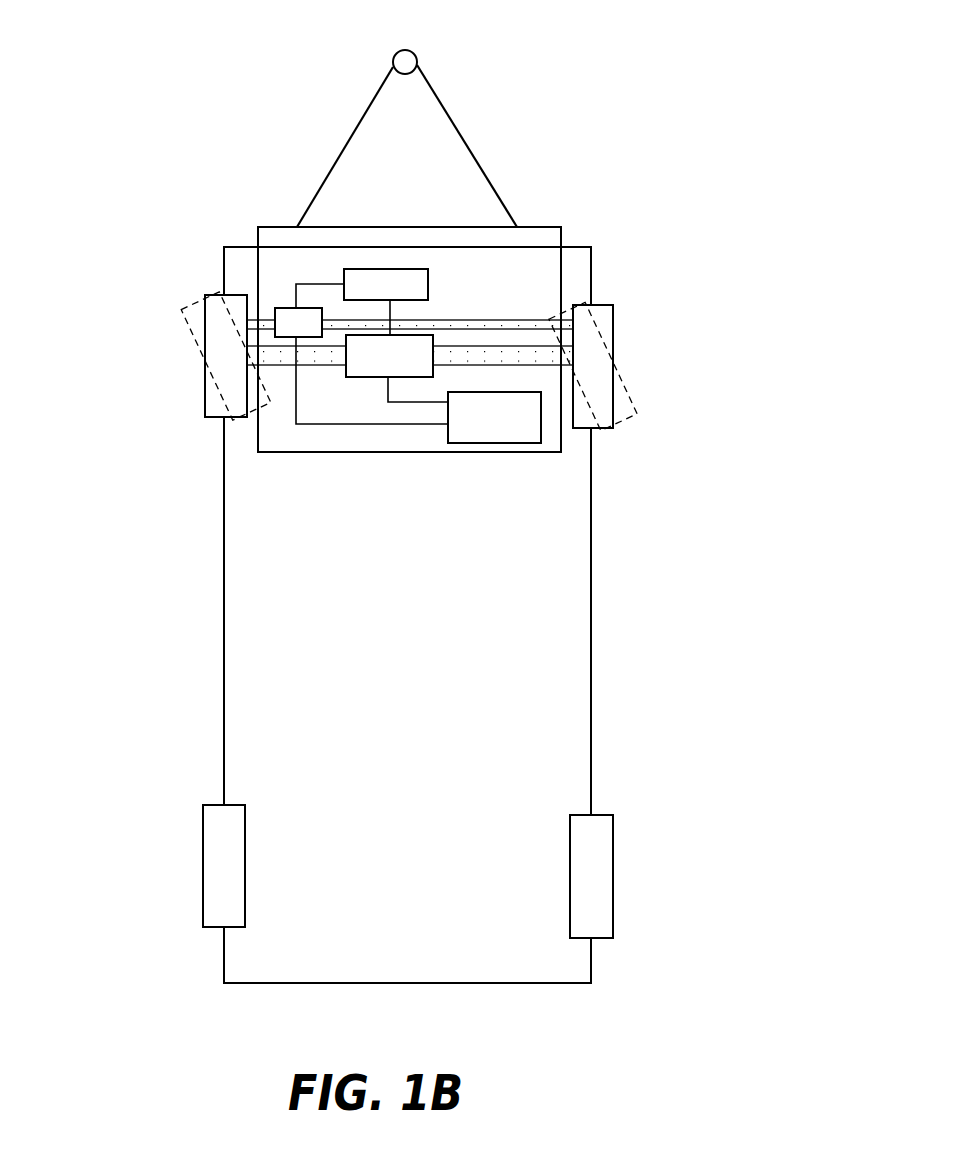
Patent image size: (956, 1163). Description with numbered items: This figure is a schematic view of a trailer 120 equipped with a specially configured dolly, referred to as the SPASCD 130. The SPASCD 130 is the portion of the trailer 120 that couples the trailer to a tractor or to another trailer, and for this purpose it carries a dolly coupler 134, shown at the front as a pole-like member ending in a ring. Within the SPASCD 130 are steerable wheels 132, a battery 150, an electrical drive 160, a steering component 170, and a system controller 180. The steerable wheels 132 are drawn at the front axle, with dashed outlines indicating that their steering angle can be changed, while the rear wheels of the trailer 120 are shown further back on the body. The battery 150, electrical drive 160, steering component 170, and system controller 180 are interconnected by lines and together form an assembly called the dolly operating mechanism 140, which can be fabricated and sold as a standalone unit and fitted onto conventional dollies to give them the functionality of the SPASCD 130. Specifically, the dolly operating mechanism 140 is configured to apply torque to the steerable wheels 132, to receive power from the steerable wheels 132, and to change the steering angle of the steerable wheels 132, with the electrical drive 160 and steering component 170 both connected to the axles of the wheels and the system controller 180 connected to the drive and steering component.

The trailer 120 is at (560, 120).
The SPASCD 130 is at (592, 237).
The steerable wheels 132 is at (613, 328).
The dolly coupler 134 is at (408, 75).
The dolly operating mechanism 140 is at (379, 442).
The battery 150 is at (510, 443).
The electrical drive 160 is at (368, 377).
The steering component 170 is at (279, 307).
The system controller 180 is at (387, 268).